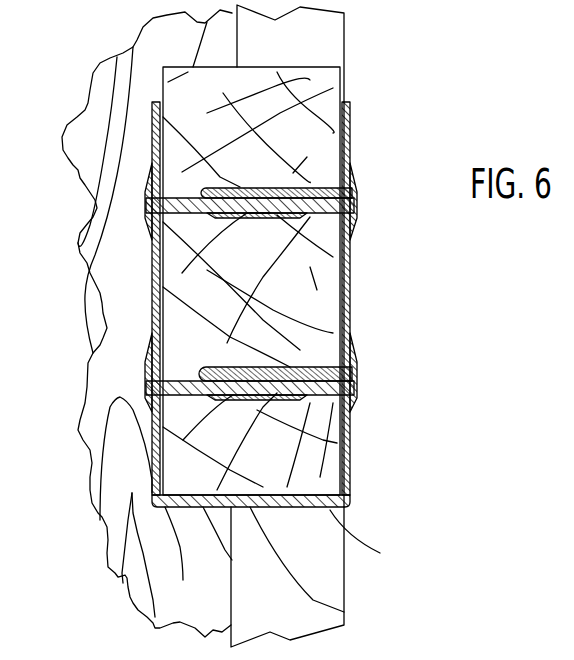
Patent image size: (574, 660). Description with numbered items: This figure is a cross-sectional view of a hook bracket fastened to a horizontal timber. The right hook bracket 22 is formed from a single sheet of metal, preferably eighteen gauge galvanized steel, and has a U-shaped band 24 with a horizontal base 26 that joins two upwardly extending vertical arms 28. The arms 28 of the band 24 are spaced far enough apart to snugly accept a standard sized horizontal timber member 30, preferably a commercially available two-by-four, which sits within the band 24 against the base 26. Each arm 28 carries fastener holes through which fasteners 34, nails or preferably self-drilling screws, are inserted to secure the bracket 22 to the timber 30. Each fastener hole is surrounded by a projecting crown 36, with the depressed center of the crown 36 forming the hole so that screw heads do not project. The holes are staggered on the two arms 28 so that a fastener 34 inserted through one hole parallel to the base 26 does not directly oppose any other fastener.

The right hook bracket 22 is at (227, 333).
The U-shaped band 24 is at (334, 503).
The horizontal base 26 is at (344, 612).
The vertical arms 28 is at (152, 467).
The horizontal timber member 30 is at (323, 67).
The fasteners 34 is at (145, 200).
The projecting crown 36 is at (145, 175).